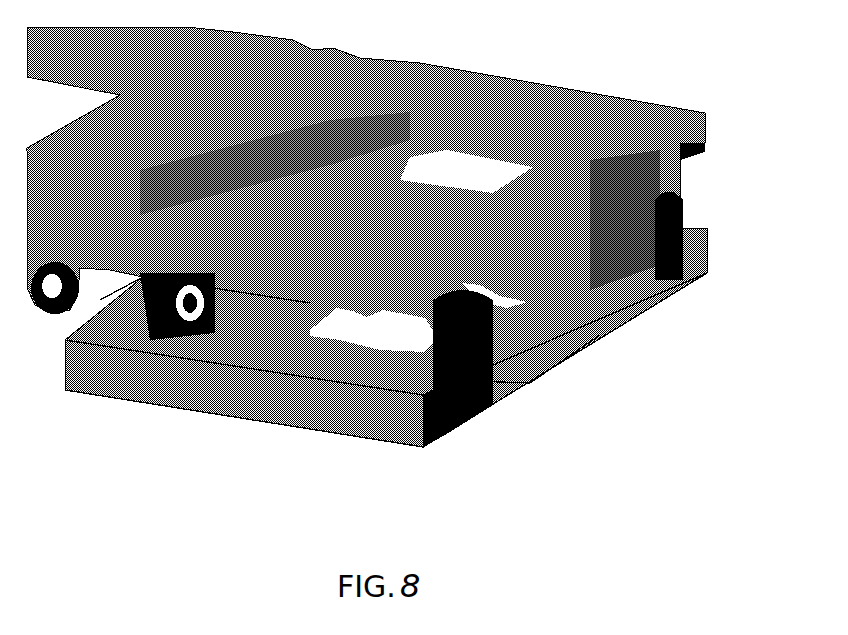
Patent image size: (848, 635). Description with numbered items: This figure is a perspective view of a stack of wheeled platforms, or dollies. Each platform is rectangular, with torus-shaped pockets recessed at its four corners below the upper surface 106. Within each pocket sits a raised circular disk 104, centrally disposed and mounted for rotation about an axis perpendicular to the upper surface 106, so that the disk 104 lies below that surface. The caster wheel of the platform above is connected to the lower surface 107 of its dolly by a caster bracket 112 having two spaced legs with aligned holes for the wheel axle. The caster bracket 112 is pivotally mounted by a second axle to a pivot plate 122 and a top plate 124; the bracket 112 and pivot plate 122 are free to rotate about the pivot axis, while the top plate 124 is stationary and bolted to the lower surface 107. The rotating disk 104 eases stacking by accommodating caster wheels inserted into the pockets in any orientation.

The circular disk 104 is at (163, 333).
The upper surface 106 is at (630, 330).
The lower surface 107 is at (252, 418).
The caster bracket 112 is at (137, 282).
The pivot plate 122 is at (678, 163).
The top plate 124 is at (693, 147).